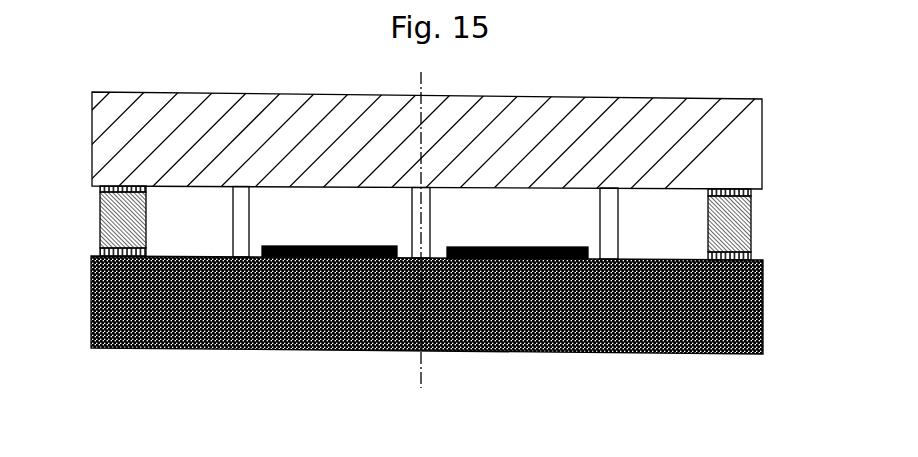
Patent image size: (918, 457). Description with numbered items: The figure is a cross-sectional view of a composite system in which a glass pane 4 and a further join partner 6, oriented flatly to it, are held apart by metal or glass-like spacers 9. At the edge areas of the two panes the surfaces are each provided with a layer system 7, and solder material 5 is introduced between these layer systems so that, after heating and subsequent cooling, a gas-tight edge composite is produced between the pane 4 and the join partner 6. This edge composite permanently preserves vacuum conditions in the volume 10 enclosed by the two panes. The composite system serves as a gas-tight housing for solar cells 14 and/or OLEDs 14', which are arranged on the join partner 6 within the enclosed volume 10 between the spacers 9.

The glass pane 4 is at (740, 125).
The solder material 5 is at (100, 220).
The join partner 6 is at (740, 308).
The layer system 7 is at (93, 188).
The spacer 9 is at (242, 207).
The volume 10 is at (553, 208).
The solar cell 14 is at (359, 330).
The OLED 14' is at (504, 317).